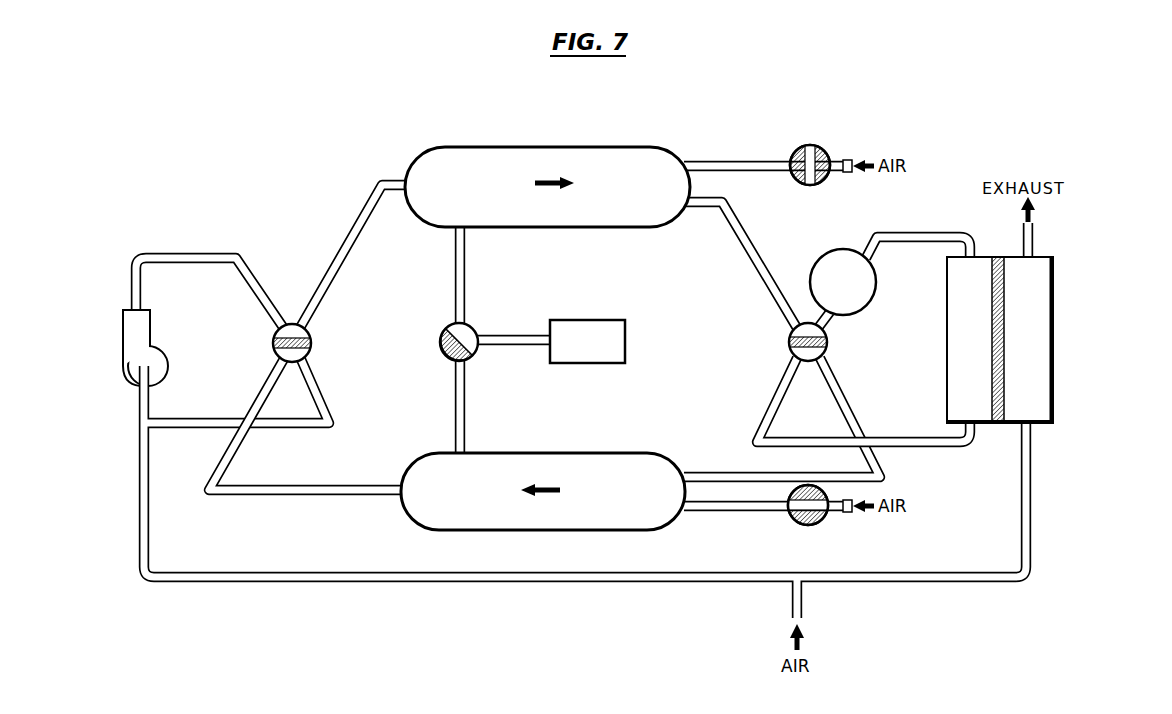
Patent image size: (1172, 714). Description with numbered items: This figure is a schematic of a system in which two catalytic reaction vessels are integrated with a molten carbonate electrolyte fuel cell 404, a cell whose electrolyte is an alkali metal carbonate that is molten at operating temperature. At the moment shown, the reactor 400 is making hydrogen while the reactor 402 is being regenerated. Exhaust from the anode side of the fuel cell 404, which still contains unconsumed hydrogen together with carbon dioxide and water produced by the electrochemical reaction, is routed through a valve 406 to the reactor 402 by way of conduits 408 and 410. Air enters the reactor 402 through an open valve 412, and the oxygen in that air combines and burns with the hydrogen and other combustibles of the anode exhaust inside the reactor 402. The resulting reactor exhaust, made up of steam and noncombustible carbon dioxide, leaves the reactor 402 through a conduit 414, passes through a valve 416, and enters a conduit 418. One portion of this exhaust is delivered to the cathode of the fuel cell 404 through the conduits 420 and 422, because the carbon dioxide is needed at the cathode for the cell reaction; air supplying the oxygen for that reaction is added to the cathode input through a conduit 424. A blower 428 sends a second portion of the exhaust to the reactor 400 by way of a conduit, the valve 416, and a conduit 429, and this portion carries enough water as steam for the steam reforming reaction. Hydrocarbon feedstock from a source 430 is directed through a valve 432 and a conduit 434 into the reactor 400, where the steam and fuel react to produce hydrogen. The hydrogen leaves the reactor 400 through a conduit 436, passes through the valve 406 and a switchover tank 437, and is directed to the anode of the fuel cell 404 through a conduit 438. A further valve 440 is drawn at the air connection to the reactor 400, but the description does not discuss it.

The reactor 400 is at (566, 216).
The reactor 402 is at (556, 522).
The molten carbonate electrolyte fuel cell 404 is at (1056, 292).
The valve 406 is at (829, 345).
The conduit 408 is at (936, 448).
The conduit 410 is at (855, 415).
The valve 412 is at (818, 520).
The conduit 414 is at (232, 458).
The valve 416 is at (312, 345).
The conduit 418 is at (322, 395).
The conduit 420 is at (597, 585).
The conduit 422 is at (1033, 464).
The conduit 424 is at (803, 604).
The blower 428 is at (163, 352).
The conduit 429 is at (352, 229).
The source 430 is at (563, 320).
The valve 432 is at (440, 345).
The conduit 434 is at (466, 268).
The conduit 436 is at (752, 262).
The switchover tank 437 is at (821, 257).
The conduit 438 is at (911, 243).
The air valve 440 is at (801, 141).